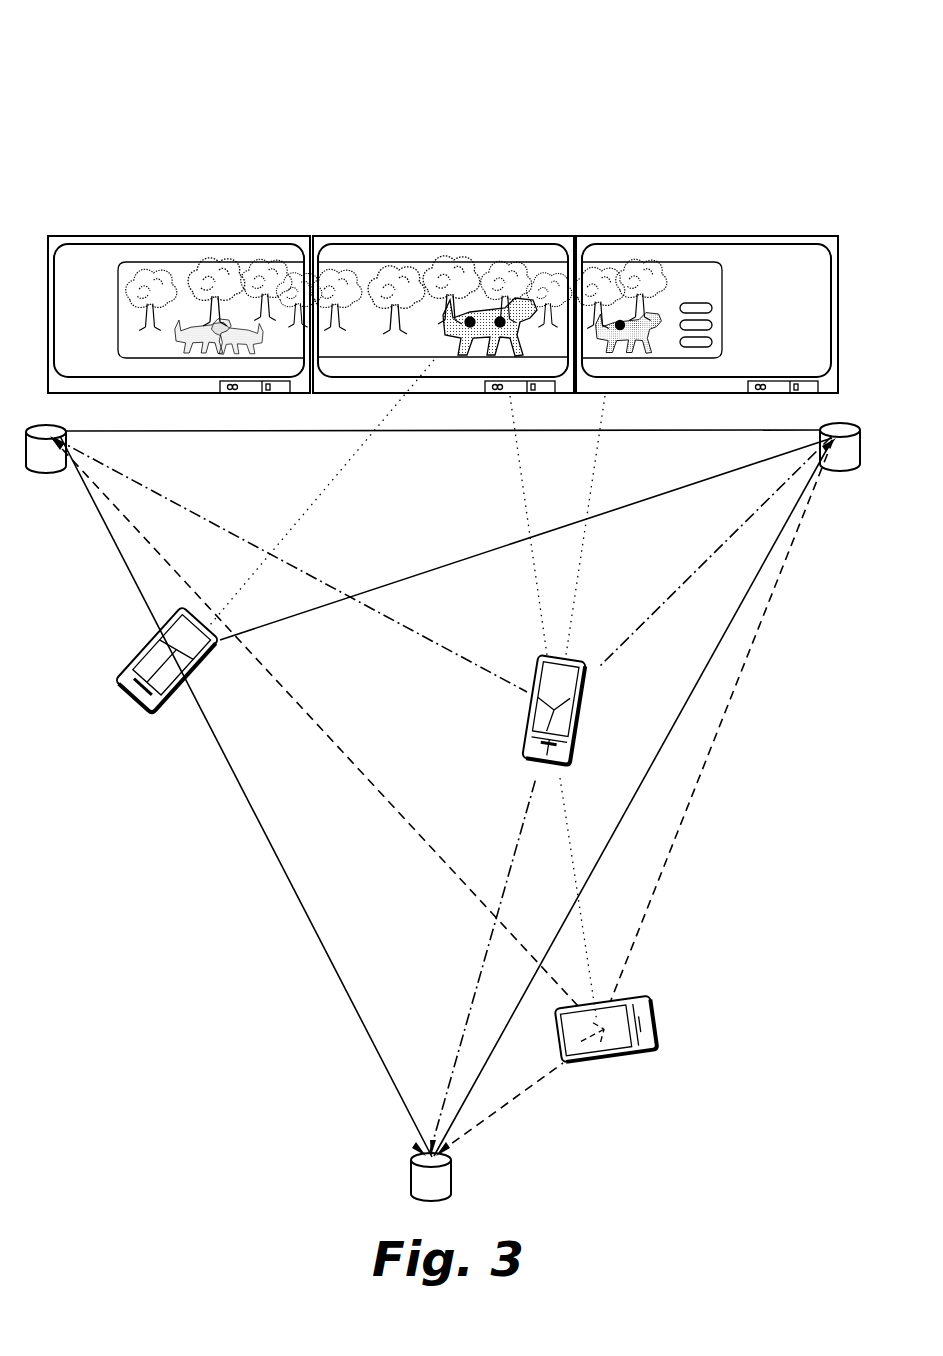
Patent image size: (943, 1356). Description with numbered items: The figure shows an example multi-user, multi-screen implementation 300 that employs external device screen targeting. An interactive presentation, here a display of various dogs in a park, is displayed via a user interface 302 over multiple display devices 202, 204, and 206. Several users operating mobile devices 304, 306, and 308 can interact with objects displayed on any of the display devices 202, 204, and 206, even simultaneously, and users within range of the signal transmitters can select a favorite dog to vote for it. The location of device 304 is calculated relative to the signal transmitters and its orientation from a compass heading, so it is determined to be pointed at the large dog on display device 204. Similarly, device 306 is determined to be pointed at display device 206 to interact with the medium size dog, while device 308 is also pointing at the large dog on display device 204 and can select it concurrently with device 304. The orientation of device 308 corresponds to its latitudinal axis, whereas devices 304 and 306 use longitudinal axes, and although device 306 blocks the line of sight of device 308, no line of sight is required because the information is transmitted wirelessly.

The multi-user, multi-screen implementation 300 is at (146, 66).
The display device 202 is at (176, 236).
The display device 204 is at (441, 236).
The display device 206 is at (703, 236).
The user interface 302 is at (460, 265).
The device 304 is at (130, 708).
The device 306 is at (582, 736).
The device 308 is at (662, 1000).